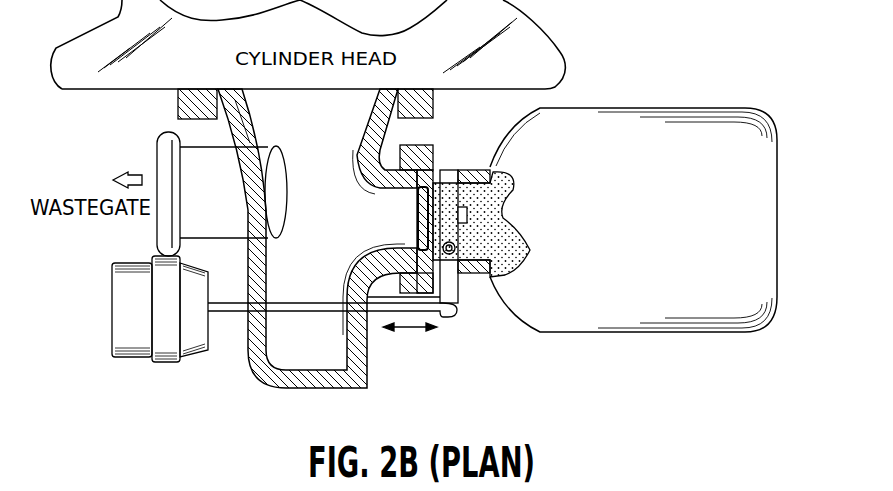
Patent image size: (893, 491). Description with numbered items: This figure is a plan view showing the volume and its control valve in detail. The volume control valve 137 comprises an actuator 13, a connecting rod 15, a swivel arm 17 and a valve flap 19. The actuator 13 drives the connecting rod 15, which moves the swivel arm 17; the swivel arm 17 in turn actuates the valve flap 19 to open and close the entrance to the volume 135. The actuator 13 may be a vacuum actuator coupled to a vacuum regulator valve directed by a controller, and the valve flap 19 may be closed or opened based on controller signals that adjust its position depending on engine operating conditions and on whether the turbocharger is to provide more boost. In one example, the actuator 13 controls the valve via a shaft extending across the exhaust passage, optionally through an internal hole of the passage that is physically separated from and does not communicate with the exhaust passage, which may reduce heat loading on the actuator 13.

The actuator 13 is at (117, 321).
The connecting rod 15 is at (238, 312).
The swivel arm 17 is at (457, 297).
The valve flap 19 is at (427, 187).
The volume 135 is at (700, 332).
The volume control valve 137 is at (198, 420).